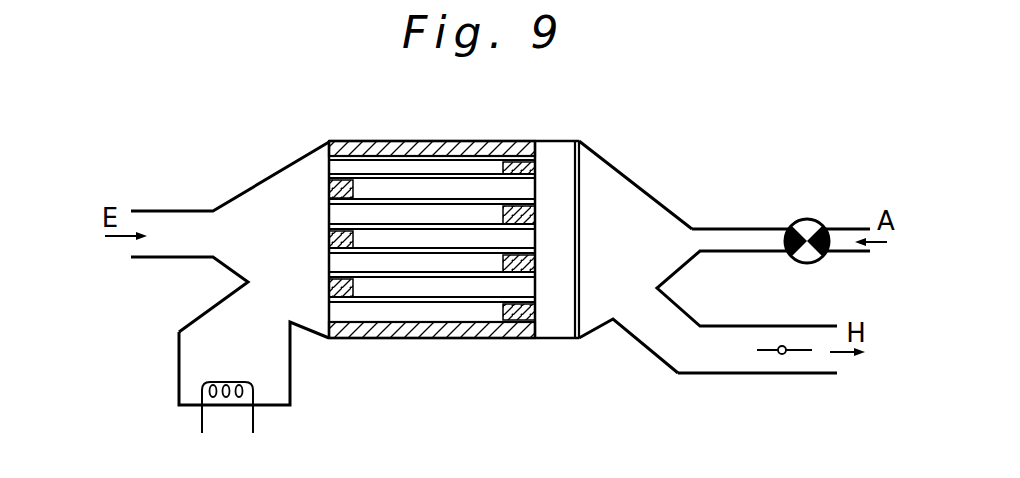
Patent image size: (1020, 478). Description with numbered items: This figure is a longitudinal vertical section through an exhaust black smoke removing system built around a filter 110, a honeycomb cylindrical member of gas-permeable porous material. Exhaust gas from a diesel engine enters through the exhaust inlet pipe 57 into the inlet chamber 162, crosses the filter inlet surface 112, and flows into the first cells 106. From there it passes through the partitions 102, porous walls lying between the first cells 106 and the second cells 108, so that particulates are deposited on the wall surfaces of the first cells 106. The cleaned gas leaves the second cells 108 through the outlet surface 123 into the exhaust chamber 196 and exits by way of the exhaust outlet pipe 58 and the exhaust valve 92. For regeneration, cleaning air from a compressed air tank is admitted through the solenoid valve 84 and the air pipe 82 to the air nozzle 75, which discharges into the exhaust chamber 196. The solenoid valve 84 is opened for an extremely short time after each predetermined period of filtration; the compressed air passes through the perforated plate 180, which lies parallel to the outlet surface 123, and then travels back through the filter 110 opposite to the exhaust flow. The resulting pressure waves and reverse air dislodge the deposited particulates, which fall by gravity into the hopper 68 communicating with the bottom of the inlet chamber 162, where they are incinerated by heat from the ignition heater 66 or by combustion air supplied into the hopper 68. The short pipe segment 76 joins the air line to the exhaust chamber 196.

The filter 110 is at (391, 136).
The partitions 102 is at (329, 216).
The first cells 106 is at (329, 159).
The filter inlet surface 112 is at (329, 263).
The outlet surface 123 is at (537, 218).
The second cells 108 is at (530, 288).
The inlet chamber 162 is at (242, 213).
The exhaust inlet pipe 57 is at (178, 258).
The hopper 68 is at (292, 365).
The ignition heater 66 is at (253, 418).
The exhaust chamber 196 is at (615, 192).
The air pipe 76 is at (688, 237).
The air pipe 82 is at (763, 229).
The solenoid valve 84 is at (815, 220).
The air nozzle 75 is at (725, 253).
The perforated plate 180 is at (582, 319).
The exhaust outlet pipe 58 is at (667, 369).
The exhaust valve 92 is at (800, 355).